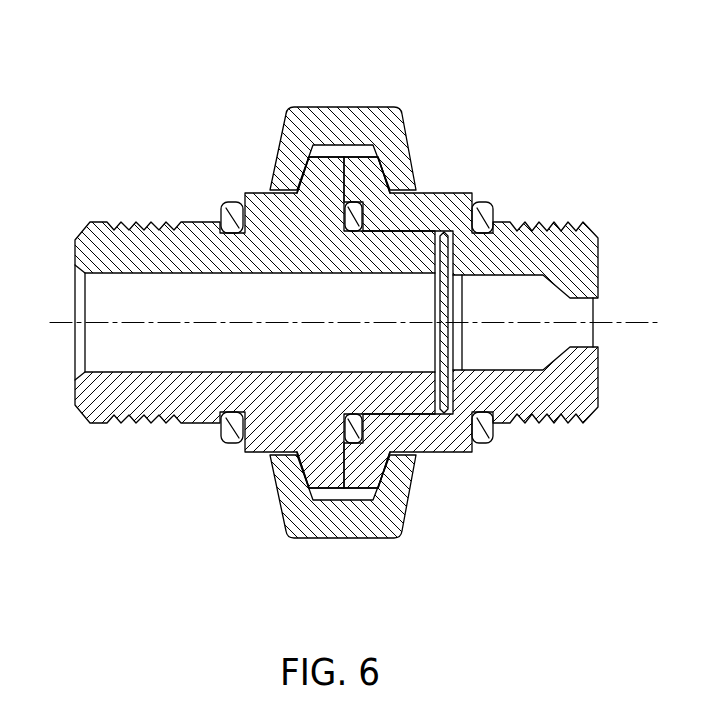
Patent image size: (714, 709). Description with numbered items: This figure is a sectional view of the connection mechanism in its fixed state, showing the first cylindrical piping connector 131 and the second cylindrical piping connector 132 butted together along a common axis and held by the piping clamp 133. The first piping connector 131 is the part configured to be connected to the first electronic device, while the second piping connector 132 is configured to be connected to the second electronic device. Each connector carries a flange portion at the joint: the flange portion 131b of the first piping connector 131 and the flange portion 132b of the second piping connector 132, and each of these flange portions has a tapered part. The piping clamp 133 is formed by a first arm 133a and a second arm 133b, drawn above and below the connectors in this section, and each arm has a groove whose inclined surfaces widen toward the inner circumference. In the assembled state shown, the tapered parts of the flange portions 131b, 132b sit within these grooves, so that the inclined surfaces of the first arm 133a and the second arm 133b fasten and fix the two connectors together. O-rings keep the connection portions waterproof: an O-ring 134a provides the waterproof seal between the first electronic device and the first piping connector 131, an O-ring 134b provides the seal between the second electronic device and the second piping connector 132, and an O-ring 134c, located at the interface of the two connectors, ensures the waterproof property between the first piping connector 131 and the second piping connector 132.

The first cylindrical piping connector 131 is at (255, 305).
The flange portion of the first piping connector 131b is at (320, 180).
The second cylindrical piping connector 132 is at (471, 307).
The flange portion of the second piping connector 132b is at (365, 180).
The piping clamp 133 is at (319, 336).
The first arm 133a is at (303, 507).
The second arm 133b is at (343, 105).
The O-ring 134a is at (233, 204).
The O-ring 134b is at (481, 204).
The O-ring 134c is at (355, 222).